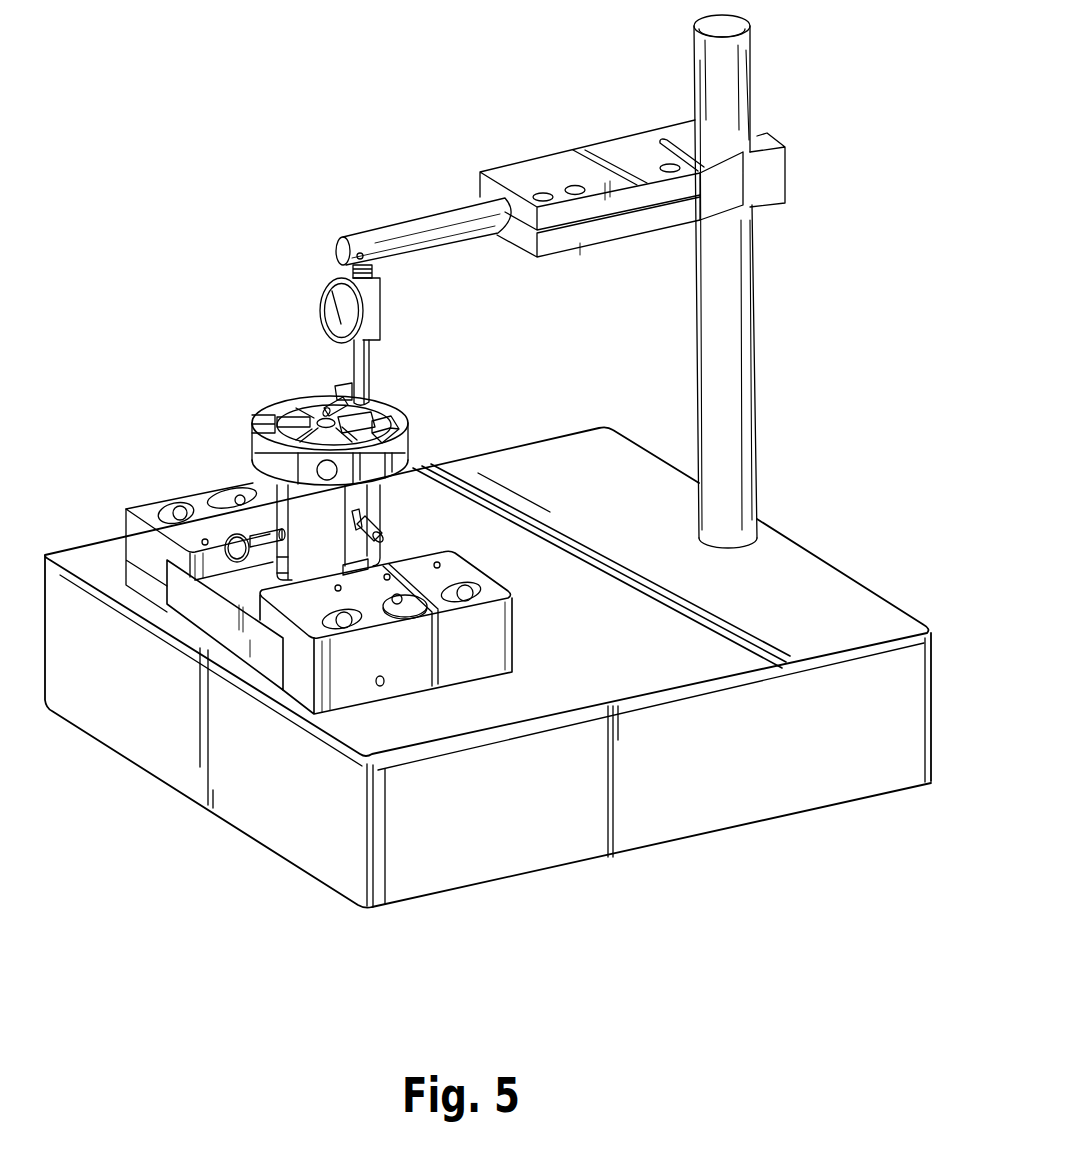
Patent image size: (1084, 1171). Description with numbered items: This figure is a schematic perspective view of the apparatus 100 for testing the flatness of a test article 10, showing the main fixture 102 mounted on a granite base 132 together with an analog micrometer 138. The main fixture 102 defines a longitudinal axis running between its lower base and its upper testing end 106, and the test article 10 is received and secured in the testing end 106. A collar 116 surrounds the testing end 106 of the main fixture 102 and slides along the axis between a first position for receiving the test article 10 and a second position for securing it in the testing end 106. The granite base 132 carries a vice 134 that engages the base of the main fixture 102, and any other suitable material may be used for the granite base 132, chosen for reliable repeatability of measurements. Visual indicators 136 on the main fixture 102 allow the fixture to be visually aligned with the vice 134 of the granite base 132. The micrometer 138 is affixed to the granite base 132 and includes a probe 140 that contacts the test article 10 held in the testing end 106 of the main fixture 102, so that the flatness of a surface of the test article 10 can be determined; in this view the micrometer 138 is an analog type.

The apparatus 100 is at (123, 280).
The test article 10 is at (299, 387).
The main fixture 102 is at (305, 505).
The testing end 106 is at (220, 618).
The collar 116 is at (256, 450).
The granite base 132 is at (933, 680).
The vice 134 is at (373, 688).
The visual indicators 136 is at (234, 545).
The micrometer 138 is at (304, 288).
The probe 140 is at (379, 383).